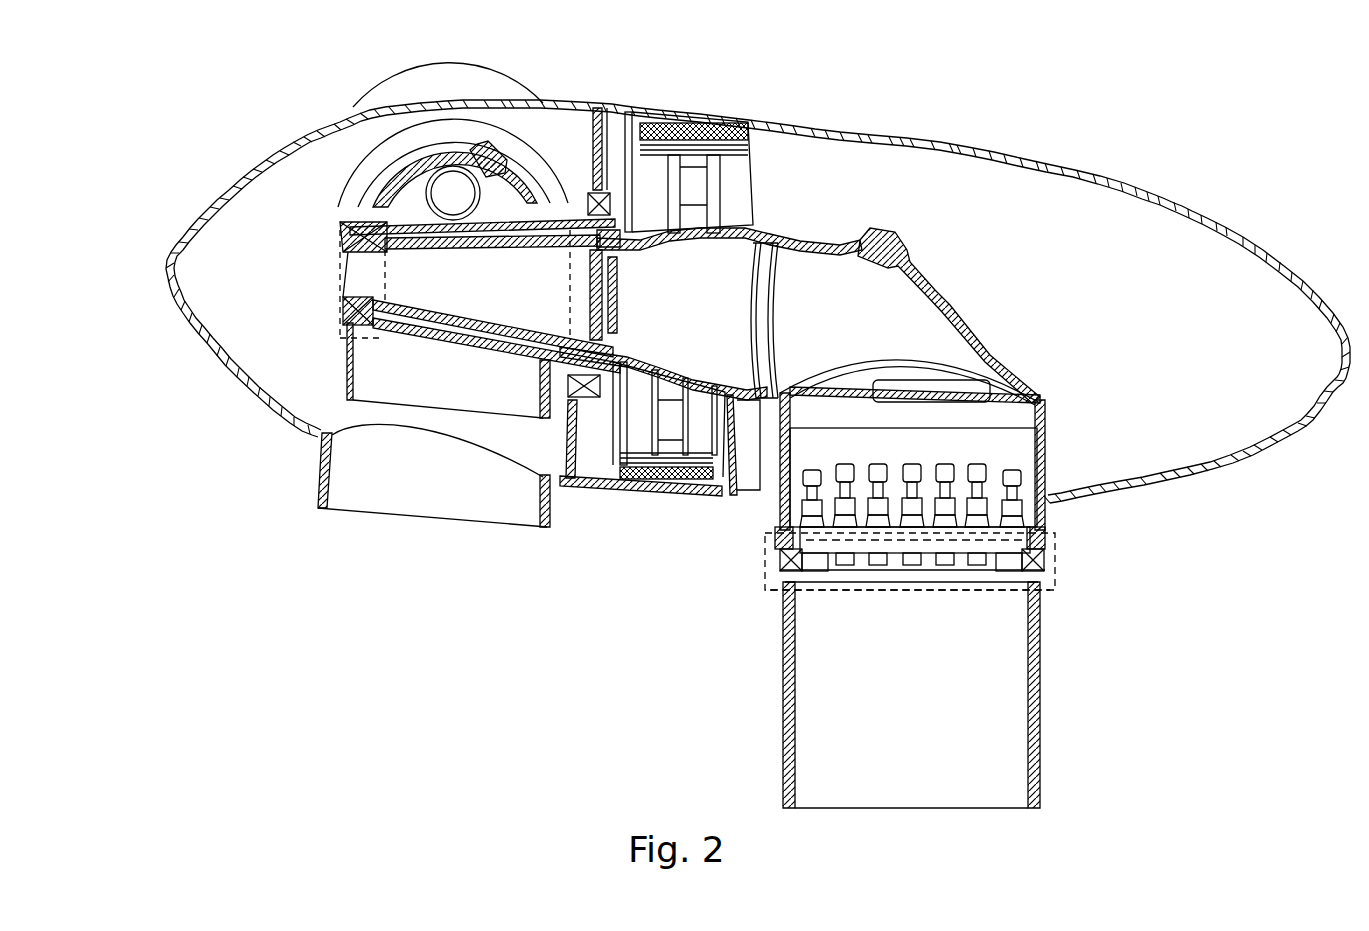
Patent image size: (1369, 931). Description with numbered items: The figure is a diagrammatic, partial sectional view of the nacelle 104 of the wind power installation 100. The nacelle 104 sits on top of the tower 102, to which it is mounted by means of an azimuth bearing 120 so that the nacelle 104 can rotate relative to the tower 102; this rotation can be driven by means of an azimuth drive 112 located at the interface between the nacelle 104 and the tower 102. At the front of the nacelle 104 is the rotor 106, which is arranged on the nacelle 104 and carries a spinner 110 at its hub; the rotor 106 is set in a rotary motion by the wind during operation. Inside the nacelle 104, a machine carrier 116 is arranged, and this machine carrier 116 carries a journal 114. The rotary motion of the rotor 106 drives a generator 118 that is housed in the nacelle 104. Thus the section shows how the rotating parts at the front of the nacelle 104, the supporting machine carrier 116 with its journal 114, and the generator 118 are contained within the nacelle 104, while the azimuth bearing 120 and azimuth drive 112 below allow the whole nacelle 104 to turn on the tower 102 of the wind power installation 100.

The wind power installation 100 is at (1190, 153).
The tower 102 is at (1040, 700).
The nacelle 104 is at (1055, 163).
The rotor 106 is at (257, 438).
The spinner 110 is at (201, 188).
The azimuth drive 112 is at (1043, 503).
The journal 114 is at (723, 195).
The machine carrier 116 is at (893, 240).
The generator 118 is at (743, 100).
The azimuth bearing 120 is at (1063, 567).